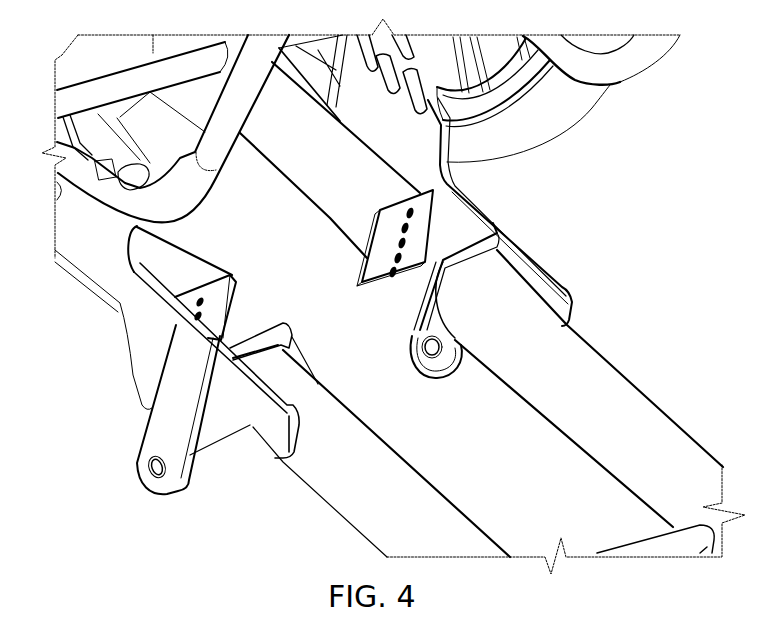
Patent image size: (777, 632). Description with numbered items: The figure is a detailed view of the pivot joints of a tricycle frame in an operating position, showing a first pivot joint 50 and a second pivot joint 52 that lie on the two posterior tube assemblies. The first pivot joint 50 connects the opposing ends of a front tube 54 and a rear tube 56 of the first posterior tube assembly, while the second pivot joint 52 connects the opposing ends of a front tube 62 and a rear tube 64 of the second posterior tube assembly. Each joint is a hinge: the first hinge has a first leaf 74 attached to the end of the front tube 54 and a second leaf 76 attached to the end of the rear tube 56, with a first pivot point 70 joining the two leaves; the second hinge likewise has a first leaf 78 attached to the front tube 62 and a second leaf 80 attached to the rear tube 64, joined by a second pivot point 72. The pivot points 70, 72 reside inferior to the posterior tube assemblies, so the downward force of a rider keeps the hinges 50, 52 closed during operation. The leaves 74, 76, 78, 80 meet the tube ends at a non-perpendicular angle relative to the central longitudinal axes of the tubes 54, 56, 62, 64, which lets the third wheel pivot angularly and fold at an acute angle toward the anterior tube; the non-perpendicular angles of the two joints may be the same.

The first pivot joint 50 is at (533, 213).
The second pivot joint 52 is at (90, 487).
The front tube 54 is at (297, 186).
The rear tube 56 is at (620, 374).
The front tube 62 is at (180, 260).
The rear tube 64 is at (306, 483).
The first pivot point 70 is at (423, 362).
The second pivot point 72 is at (150, 480).
The first leaf 74 is at (363, 270).
The second leaf 76 is at (407, 328).
The first leaf 78 is at (238, 294).
The second leaf 80 is at (276, 324).